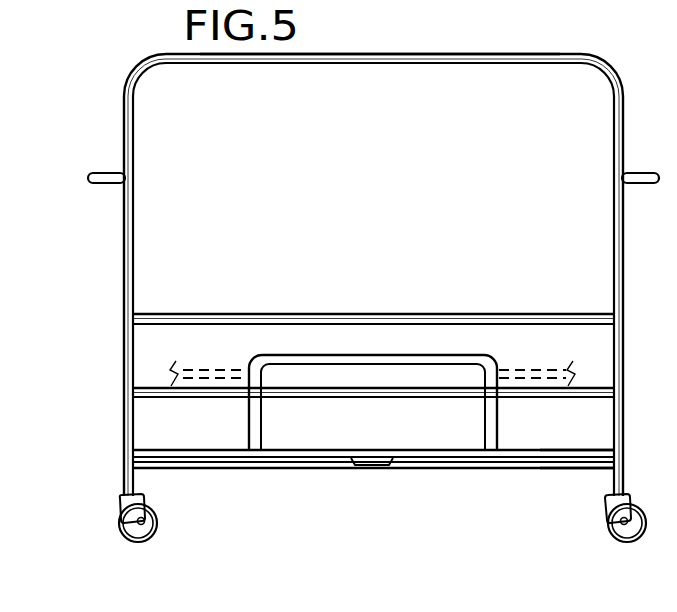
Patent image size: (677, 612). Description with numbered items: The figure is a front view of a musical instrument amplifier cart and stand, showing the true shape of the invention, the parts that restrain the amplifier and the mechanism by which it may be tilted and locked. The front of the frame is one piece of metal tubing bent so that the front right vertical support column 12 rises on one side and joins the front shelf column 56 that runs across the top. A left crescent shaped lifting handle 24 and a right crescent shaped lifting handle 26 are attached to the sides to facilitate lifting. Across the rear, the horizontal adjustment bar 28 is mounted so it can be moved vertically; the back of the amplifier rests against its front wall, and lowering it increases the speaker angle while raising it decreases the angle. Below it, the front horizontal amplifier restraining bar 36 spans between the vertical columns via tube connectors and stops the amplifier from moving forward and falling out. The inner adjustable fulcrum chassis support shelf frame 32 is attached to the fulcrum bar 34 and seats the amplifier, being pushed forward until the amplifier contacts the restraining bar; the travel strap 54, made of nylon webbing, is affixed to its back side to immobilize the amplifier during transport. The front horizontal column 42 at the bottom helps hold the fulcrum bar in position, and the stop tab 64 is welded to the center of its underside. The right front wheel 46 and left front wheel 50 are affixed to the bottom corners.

The front right vertical support column 12 is at (614, 237).
The left crescent shaped lifting handle 24 is at (94, 173).
The right crescent shaped lifting handle 26 is at (640, 173).
The horizontal adjustment bar 28 is at (513, 314).
The inner adjustable fulcrum chassis support shelf frame 32 is at (283, 357).
The fulcrum bar 34 is at (281, 466).
The front horizontal amplifier restraining bar 36 is at (228, 398).
The front horizontal column 42 is at (540, 456).
The right front wheel 46 is at (620, 510).
The left front wheel 50 is at (127, 508).
The travel strap 54 is at (526, 369).
The front shelf column 56 is at (557, 60).
The stop tab 64 is at (383, 466).